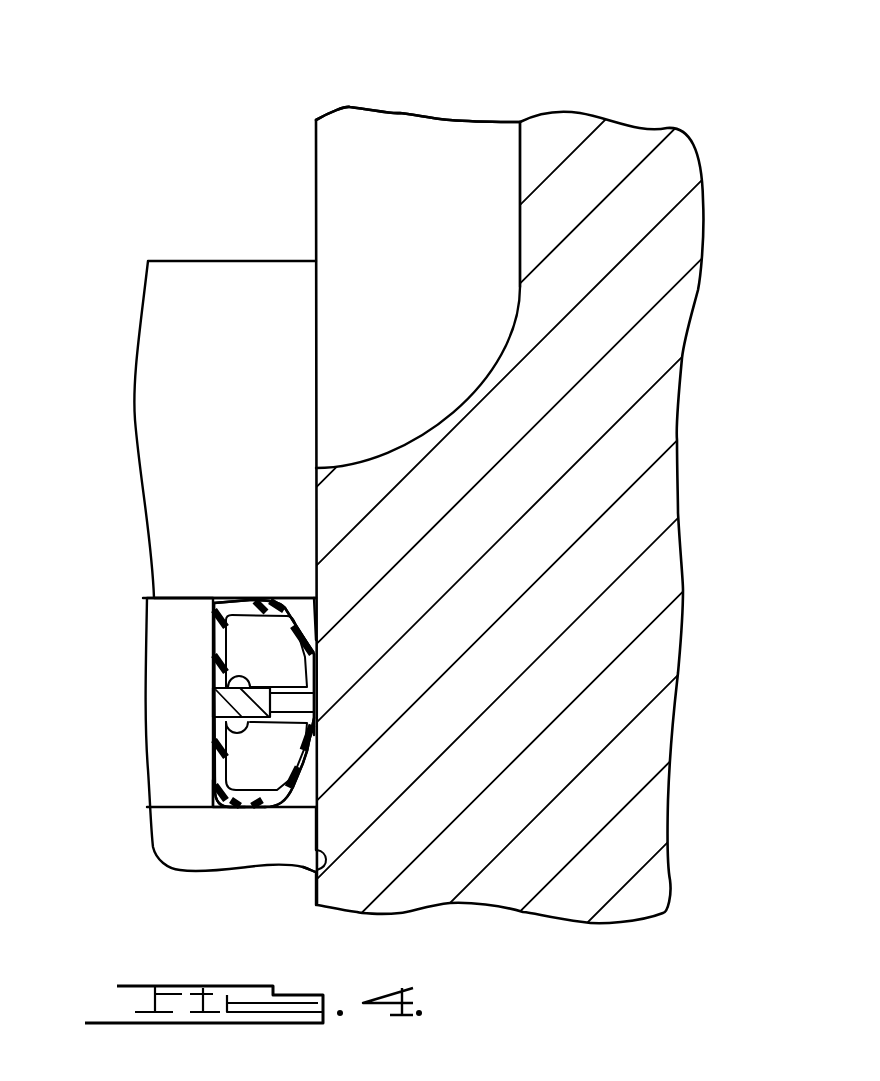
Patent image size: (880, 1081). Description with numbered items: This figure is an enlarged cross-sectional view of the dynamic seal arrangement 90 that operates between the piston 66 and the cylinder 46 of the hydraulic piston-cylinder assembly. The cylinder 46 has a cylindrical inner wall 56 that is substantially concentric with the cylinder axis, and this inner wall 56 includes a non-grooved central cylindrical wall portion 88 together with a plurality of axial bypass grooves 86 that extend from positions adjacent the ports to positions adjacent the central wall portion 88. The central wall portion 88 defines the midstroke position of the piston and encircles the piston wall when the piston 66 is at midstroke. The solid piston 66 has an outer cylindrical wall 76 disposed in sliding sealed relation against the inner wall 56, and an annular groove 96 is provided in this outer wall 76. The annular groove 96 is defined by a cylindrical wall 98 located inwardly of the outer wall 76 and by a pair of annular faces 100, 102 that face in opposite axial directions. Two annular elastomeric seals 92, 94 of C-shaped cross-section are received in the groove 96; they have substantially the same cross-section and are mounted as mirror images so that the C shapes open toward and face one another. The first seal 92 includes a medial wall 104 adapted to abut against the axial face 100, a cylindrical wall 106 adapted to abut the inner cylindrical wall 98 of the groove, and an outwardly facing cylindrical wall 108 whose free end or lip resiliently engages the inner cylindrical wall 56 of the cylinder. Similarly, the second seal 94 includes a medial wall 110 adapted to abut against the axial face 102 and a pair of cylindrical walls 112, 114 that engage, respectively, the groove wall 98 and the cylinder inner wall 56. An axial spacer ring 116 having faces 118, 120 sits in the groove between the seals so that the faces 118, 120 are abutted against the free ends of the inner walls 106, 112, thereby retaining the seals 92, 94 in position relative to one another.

The cylinder 46 is at (617, 634).
The inner wall 56 is at (313, 157).
The piston 66 is at (151, 847).
The outer cylindrical wall 76 is at (350, 847).
The axial bypass grooves 86 is at (521, 124).
The central cylindrical wall portion 88 is at (303, 836).
The dynamic seal arrangement 90 is at (229, 258).
The annular elastomeric seal 92 is at (229, 598).
The annular elastomeric seal 94 is at (222, 809).
The annular groove 96 is at (169, 604).
The cylindrical wall 98 is at (228, 757).
The annular face 100 is at (318, 614).
The annular face 102 is at (298, 803).
The medial wall 104 is at (251, 601).
The cylindrical wall 106 is at (214, 648).
The cylindrical wall 108 is at (317, 650).
The medial wall 110 is at (268, 807).
The cylindrical wall 112 is at (223, 784).
The cylindrical wall 114 is at (318, 733).
The axial spacer ring 116 is at (235, 703).
The face 118 is at (224, 686).
The face 120 is at (218, 752).